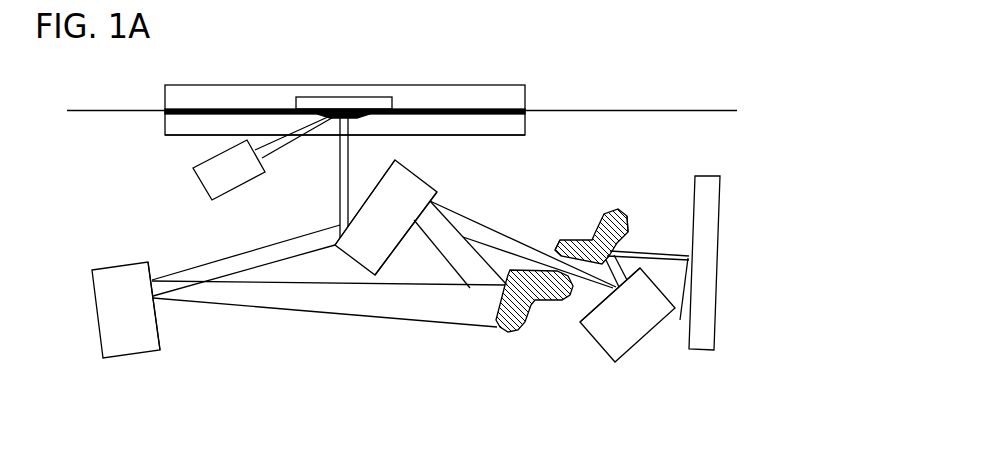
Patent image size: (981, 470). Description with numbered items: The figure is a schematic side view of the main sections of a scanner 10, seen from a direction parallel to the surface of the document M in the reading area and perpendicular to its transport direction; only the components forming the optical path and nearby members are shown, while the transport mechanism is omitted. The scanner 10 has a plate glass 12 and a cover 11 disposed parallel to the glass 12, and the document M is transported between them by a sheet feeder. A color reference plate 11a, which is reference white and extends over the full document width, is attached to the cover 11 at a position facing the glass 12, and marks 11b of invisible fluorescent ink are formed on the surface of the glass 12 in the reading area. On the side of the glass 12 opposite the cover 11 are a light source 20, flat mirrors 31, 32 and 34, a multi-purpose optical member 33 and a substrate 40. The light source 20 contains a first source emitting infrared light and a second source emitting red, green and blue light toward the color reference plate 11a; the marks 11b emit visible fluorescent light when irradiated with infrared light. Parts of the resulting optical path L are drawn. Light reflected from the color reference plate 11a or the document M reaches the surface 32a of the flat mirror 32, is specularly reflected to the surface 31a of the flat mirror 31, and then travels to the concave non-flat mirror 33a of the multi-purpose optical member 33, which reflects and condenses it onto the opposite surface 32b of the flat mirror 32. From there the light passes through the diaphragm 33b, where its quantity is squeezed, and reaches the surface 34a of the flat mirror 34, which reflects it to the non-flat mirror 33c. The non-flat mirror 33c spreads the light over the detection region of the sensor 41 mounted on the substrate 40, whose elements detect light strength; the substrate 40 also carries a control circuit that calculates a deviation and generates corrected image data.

The scanner 10 is at (198, 41).
The cover 11 is at (368, 95).
The color reference plate 11a is at (379, 81).
The marks 11b is at (401, 137).
The plate glass 12 is at (379, 145).
The light source 20 is at (240, 160).
The flat mirror 31 is at (102, 300).
The surface 31a is at (213, 326).
The flat mirror 32 is at (417, 216).
The surface 32a is at (374, 190).
The opposite surface 32b is at (443, 227).
The multi-purpose optical member 33 is at (612, 206).
The non-flat mirror 33a is at (482, 315).
The diaphragm 33b is at (559, 224).
The non-flat mirror 33c is at (703, 178).
The flat mirror 34 is at (611, 340).
The surface 34a is at (516, 327).
The substrate 40 is at (766, 249).
The sensor 41 is at (658, 328).
The optical path L is at (328, 287).
The document M is at (402, 93).